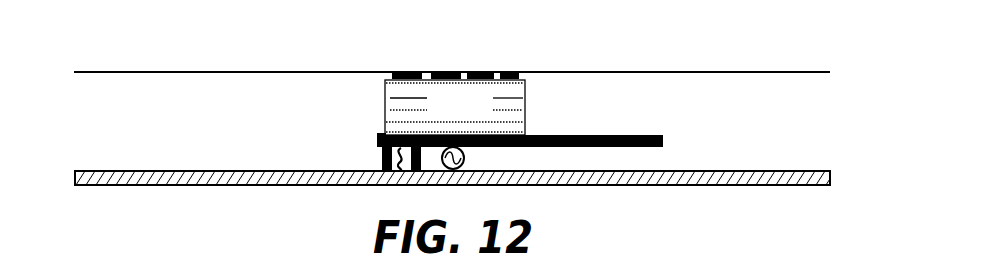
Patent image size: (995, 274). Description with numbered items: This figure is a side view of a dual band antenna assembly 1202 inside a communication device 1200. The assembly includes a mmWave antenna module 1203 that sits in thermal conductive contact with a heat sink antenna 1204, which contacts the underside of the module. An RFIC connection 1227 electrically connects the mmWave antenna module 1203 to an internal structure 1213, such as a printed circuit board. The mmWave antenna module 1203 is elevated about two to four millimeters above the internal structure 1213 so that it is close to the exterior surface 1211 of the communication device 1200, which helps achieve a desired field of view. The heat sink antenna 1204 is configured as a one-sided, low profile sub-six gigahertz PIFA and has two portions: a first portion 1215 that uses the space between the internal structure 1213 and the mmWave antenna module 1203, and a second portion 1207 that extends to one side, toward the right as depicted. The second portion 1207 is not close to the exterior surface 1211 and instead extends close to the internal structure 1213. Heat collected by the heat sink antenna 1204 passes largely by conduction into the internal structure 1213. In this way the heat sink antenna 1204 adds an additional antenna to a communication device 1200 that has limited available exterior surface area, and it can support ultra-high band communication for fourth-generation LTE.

The communication device 1200 is at (170, 56).
The exterior surface 1211 is at (227, 72).
The dual band antenna assembly 1202 is at (371, 118).
The mmWave antenna module 1203 is at (482, 112).
The heat sink antenna 1204 is at (371, 143).
The second portion 1207 is at (650, 134).
The RFIC connection 1227 is at (400, 155).
The first portion 1215 is at (502, 144).
The internal structure 1213 is at (210, 186).